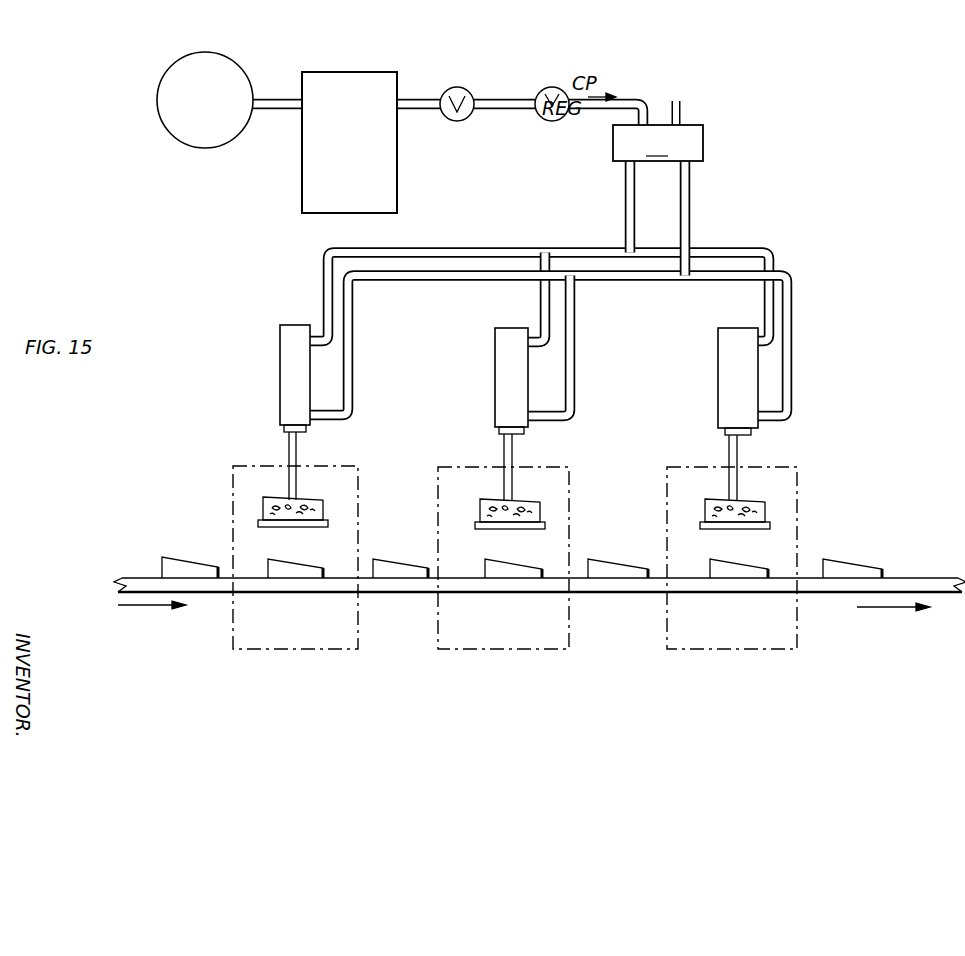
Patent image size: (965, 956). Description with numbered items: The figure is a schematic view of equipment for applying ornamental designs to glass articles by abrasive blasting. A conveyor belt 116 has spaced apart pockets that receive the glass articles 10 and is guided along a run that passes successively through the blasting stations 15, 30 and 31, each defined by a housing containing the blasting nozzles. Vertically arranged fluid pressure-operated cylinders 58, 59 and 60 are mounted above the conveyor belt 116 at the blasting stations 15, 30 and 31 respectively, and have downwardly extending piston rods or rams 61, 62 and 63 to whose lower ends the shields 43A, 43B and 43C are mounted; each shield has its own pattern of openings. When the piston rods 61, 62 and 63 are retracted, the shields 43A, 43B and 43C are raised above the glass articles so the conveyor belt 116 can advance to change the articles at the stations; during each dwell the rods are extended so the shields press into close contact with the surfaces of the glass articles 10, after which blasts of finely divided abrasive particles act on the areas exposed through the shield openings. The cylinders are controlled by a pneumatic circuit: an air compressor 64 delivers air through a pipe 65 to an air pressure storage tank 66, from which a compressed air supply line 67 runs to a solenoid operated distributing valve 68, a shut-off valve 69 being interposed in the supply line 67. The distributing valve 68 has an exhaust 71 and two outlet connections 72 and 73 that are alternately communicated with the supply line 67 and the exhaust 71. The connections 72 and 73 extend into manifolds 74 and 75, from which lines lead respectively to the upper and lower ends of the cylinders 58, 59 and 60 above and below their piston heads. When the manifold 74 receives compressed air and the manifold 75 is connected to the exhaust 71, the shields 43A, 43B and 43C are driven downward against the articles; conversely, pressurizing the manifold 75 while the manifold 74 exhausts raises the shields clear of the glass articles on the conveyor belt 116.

The air compressor 64 is at (212, 62).
The pipe 65 is at (272, 104).
The air pressure storage tank 66 is at (350, 75).
The compressed air supply line 67 is at (492, 99).
The solenoid operated distributing valve 68 is at (658, 143).
The shut-off valve 69 is at (446, 117).
The exhaust 71 is at (682, 114).
The outlet connection 72 is at (625, 183).
The outlet connection 73 is at (690, 186).
The manifold 74 is at (458, 246).
The manifold 75 is at (632, 280).
The fluid pressure-operated cylinder 58 is at (283, 375).
The fluid pressure-operated cylinder 59 is at (496, 380).
The fluid pressure-operated cylinder 60 is at (723, 376).
The piston rod 61 is at (298, 452).
The piston rod 62 is at (513, 452).
The piston rod 63 is at (739, 453).
The shield 43A is at (300, 502).
The shield 43B is at (510, 502).
The shield 43C is at (735, 502).
The blasting station 15 is at (358, 511).
The blasting station 30 is at (569, 505).
The blasting station 31 is at (797, 502).
The glass article 10 is at (182, 560).
The conveyor belt 116 is at (486, 588).